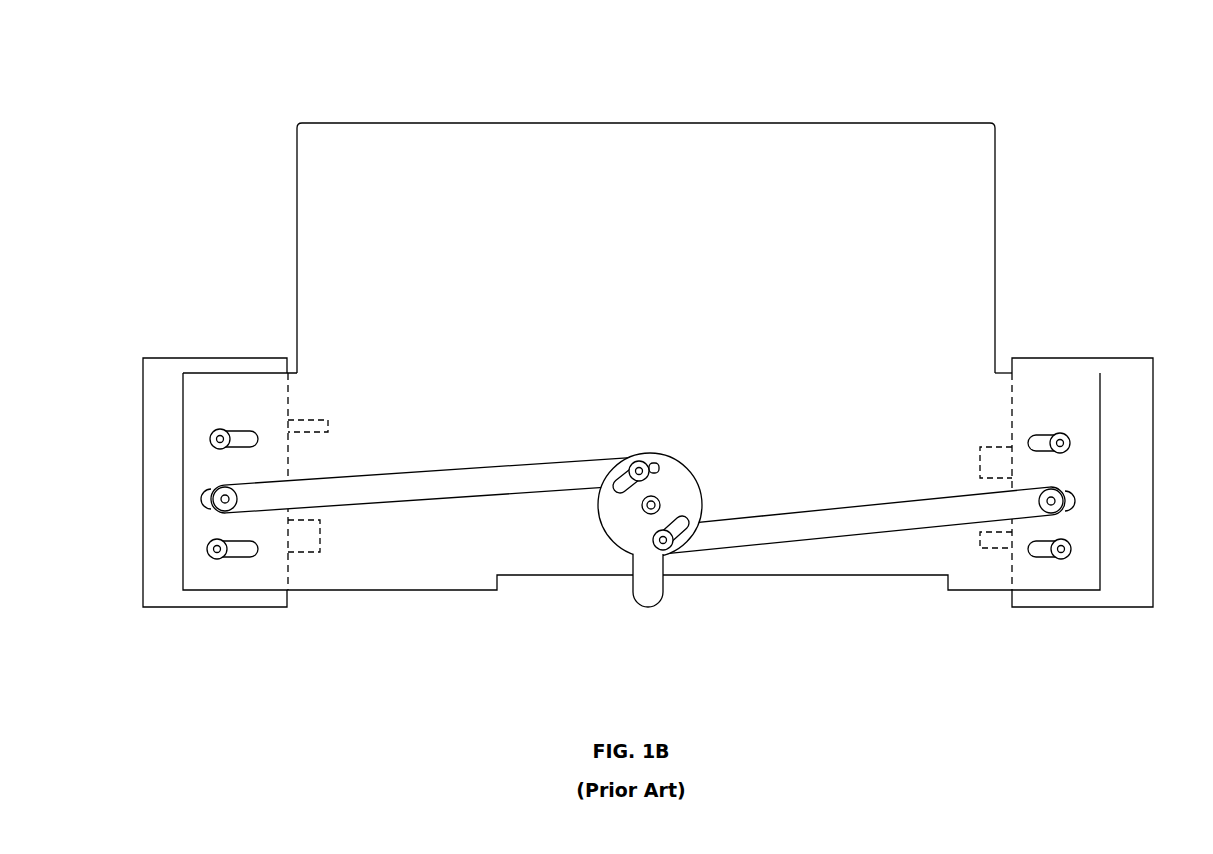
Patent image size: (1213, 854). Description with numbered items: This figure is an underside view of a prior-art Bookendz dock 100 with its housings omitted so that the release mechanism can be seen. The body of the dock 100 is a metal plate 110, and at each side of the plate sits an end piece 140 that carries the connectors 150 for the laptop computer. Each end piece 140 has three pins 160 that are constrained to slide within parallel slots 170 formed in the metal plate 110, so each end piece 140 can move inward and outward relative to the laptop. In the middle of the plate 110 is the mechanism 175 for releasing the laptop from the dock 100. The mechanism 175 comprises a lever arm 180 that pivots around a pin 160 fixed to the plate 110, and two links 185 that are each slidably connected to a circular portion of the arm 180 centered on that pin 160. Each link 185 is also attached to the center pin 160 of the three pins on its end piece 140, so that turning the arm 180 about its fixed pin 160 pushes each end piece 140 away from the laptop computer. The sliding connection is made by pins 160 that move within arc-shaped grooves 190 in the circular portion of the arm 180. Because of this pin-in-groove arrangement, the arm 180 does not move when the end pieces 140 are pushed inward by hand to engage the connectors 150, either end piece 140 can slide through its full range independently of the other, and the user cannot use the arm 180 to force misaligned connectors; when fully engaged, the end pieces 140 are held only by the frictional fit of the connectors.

The Bookendz dock 100 is at (233, 56).
The metal plate 110 is at (545, 128).
The end piece 140 is at (175, 357).
The connectors 150 is at (990, 450).
The pin 160 is at (214, 430).
The parallel slots 170 is at (206, 490).
The mechanism 175 is at (592, 433).
The lever arm 180 is at (647, 608).
The link 185 is at (471, 480).
The arc-shaped grooves 190 is at (655, 465).